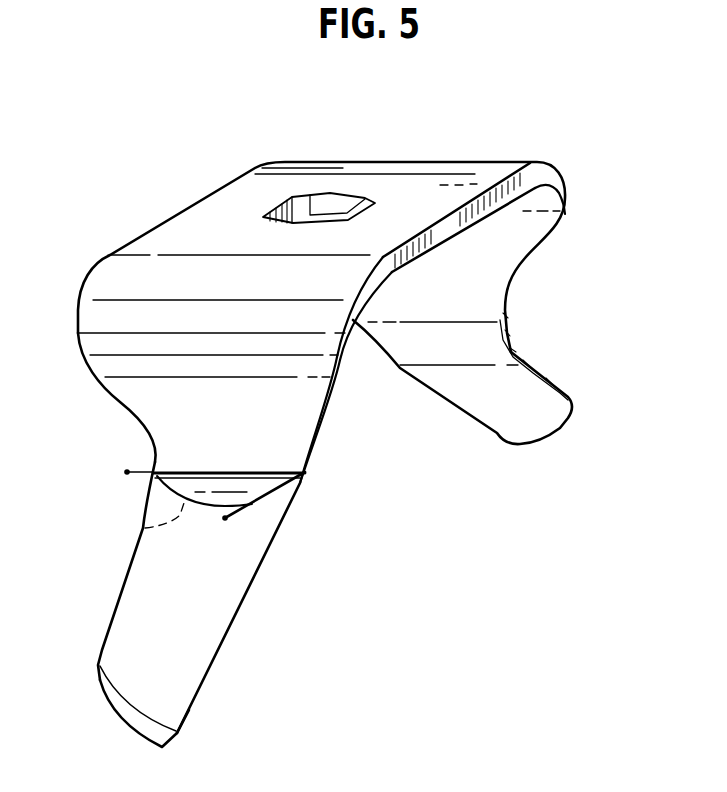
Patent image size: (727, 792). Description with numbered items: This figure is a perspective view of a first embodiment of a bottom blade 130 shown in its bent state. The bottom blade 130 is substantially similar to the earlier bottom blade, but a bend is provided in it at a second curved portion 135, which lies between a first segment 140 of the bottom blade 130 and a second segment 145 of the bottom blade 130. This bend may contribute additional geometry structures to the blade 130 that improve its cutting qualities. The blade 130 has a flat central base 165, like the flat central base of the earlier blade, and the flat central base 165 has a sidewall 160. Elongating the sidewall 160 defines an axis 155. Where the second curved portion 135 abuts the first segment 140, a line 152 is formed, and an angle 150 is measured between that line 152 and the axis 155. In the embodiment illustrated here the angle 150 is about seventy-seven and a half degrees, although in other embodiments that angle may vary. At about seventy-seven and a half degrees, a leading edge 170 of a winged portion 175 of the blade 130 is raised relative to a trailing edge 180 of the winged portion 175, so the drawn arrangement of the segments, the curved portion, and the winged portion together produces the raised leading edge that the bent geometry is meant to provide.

The bottom blade 130 is at (600, 254).
The second curved portion 135 is at (306, 477).
The first segment 140 is at (110, 388).
The second segment 145 is at (112, 600).
The angle 150 is at (147, 529).
The line 152 is at (157, 470).
The axis 155 is at (252, 505).
The sidewall 160 is at (455, 216).
The flat central base 165 is at (430, 178).
The leading edge 170 is at (190, 711).
The winged portion 175 is at (205, 628).
The trailing edge 180 is at (98, 658).